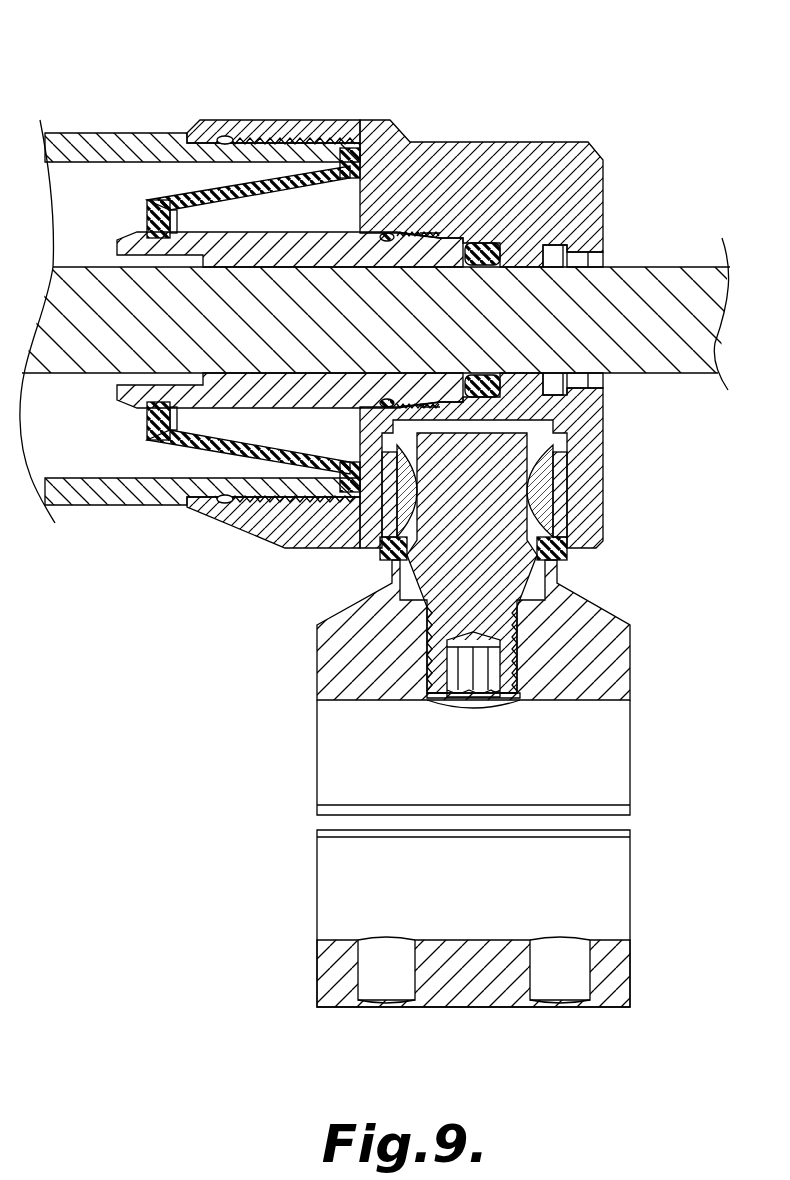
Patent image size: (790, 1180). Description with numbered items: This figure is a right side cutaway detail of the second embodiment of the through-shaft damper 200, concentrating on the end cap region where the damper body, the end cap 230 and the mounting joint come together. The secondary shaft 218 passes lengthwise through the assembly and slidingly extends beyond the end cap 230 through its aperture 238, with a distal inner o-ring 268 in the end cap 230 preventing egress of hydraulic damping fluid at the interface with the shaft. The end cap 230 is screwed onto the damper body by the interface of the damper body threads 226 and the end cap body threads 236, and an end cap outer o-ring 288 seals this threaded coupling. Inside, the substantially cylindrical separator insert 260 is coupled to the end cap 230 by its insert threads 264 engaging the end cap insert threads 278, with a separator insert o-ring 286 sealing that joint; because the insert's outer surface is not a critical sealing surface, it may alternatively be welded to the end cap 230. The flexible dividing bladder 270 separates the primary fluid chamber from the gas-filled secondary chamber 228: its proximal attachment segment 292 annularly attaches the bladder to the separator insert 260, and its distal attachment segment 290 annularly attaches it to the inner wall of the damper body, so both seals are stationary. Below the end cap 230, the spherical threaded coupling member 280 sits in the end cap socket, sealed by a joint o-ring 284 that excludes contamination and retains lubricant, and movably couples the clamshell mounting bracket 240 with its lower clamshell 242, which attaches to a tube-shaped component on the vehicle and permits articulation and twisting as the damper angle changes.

The through-shaft damper 200 is at (616, 76).
The secondary shaft 218 is at (678, 266).
The damper body threads 226 is at (302, 121).
The secondary chamber 228 is at (386, 233).
The end cap 230 is at (520, 142).
The end cap body threads 236 is at (258, 138).
The aperture 238 is at (600, 251).
The clamshell mounting bracket 240 is at (630, 653).
The lower clamshell 242 is at (630, 963).
The separator insert 260 is at (127, 233).
The insert threads 264 is at (488, 142).
The distal inner o-ring 268 is at (487, 243).
The flexible dividing bladder 270 is at (172, 192).
The end cap insert threads 278 is at (427, 232).
The threaded coupling member 280 is at (556, 586).
The joint o-ring 284 is at (560, 556).
The separator insert o-ring 286 is at (412, 233).
The end cap outer o-ring 288 is at (222, 136).
The distal attachment segment 290 is at (352, 150).
The proximal attachment segment 292 is at (147, 209).